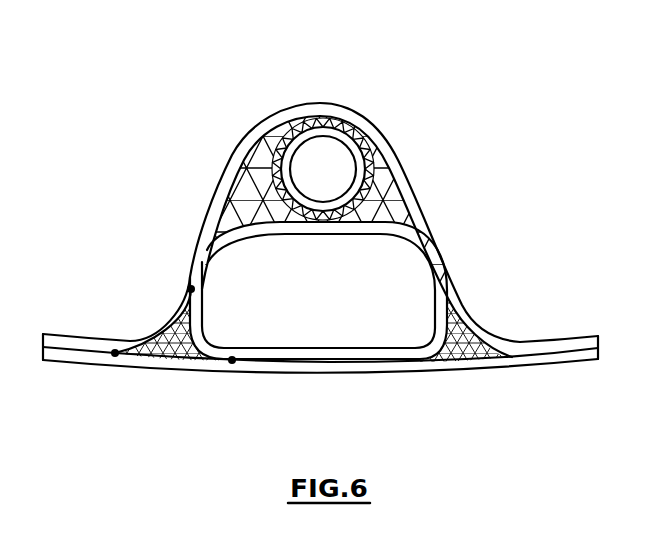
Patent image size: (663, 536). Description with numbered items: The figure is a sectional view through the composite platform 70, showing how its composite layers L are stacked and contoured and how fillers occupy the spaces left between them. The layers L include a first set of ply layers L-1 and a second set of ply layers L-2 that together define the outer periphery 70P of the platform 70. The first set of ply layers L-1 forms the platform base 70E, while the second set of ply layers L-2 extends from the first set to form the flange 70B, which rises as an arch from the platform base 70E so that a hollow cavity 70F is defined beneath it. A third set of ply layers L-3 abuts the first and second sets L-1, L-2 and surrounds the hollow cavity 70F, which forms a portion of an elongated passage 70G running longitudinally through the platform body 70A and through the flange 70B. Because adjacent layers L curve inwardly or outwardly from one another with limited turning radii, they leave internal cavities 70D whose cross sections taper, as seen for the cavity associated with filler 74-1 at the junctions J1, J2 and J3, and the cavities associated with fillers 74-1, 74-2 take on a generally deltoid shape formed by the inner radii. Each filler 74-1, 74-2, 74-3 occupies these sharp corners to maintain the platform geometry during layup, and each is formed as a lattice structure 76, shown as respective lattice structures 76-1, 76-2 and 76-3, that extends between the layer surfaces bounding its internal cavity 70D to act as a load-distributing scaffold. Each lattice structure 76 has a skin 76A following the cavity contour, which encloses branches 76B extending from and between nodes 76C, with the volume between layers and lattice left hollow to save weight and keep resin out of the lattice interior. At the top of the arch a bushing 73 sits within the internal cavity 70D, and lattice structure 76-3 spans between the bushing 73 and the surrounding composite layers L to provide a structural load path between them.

The platform 70 is at (110, 68).
The bushing 73 is at (327, 128).
The filler 74-1 is at (155, 353).
The filler 74-2 is at (477, 357).
The filler 74-3 is at (367, 152).
The lattice structure 76 is at (307, 236).
The lattice structure 76-1 is at (182, 320).
The lattice structure 76-2 is at (483, 316).
The lattice structure 76-3 is at (401, 153).
The skin 76A is at (383, 230).
The branches 76B is at (290, 213).
The nodes 76C is at (287, 212).
The platform body 70A is at (530, 337).
The flanges 70B is at (420, 178).
The internal cavity 70D is at (410, 202).
The platform base 70E is at (353, 378).
The hollow cavity 70F is at (320, 331).
The passage 70G is at (425, 302).
The outer periphery 70P is at (302, 376).
The composite layers L is at (438, 236).
The first set of ply layers L-1 is at (62, 356).
The second set of ply layers L-2 is at (83, 343).
The third set of ply layers L-3 is at (223, 243).
The junction J1 is at (115, 353).
The junction J2 is at (191, 289).
The junction J3 is at (232, 360).